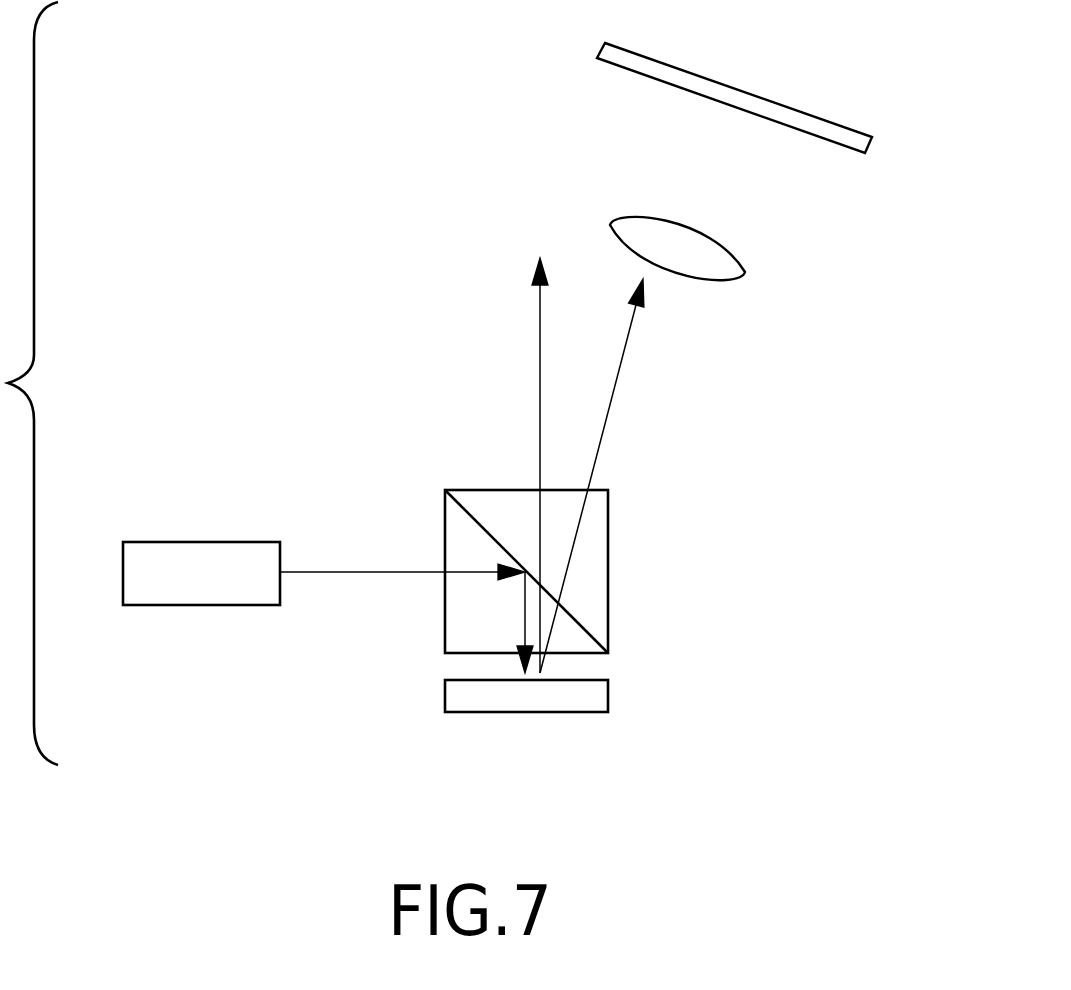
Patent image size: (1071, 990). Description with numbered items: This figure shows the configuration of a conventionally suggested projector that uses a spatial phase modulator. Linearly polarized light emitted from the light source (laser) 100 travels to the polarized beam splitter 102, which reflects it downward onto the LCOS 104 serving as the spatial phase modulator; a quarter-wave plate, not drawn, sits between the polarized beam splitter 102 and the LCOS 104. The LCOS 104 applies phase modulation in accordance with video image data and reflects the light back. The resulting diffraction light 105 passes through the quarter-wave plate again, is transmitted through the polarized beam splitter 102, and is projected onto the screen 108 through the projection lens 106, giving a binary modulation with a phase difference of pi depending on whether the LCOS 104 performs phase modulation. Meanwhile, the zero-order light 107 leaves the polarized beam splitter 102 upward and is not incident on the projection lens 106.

The light source (laser) 100 is at (200, 540).
The polarized beam splitter (PBS) 102 is at (608, 565).
The LCOS 104 is at (608, 697).
The diffraction light 105 is at (619, 370).
The projection lens 106 is at (745, 272).
The zero-order light 107 is at (540, 358).
The screen 108 is at (828, 143).